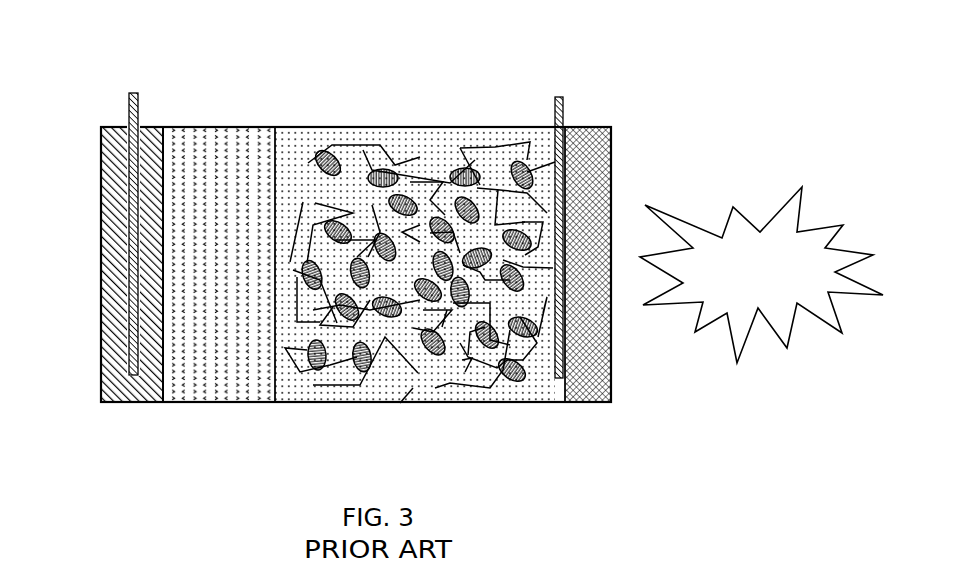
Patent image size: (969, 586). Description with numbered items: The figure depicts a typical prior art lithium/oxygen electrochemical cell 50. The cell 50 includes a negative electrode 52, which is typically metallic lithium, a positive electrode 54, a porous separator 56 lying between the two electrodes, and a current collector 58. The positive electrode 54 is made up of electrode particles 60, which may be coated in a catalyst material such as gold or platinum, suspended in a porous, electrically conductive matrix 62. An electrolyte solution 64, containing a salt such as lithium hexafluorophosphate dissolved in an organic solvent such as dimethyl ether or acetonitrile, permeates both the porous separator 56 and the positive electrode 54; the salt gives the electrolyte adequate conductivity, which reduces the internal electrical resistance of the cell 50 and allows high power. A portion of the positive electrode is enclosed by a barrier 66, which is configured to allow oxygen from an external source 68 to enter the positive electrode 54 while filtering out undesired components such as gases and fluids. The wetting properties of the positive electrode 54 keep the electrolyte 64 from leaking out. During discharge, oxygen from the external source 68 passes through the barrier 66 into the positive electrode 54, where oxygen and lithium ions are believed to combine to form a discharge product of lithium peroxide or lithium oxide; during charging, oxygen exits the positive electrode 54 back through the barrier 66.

The lithium/oxygen electrochemical cell 50 is at (138, 66).
The negative electrode 52 is at (101, 220).
The positive electrode 54 is at (512, 403).
The porous separator 56 is at (205, 403).
The current collector 58 is at (563, 112).
The electrode particles 60 is at (322, 155).
The porous, electrically conductive matrix 62 is at (418, 165).
The electrolyte solution 64 is at (410, 385).
The barrier 66 is at (611, 134).
The external source 68 is at (803, 200).